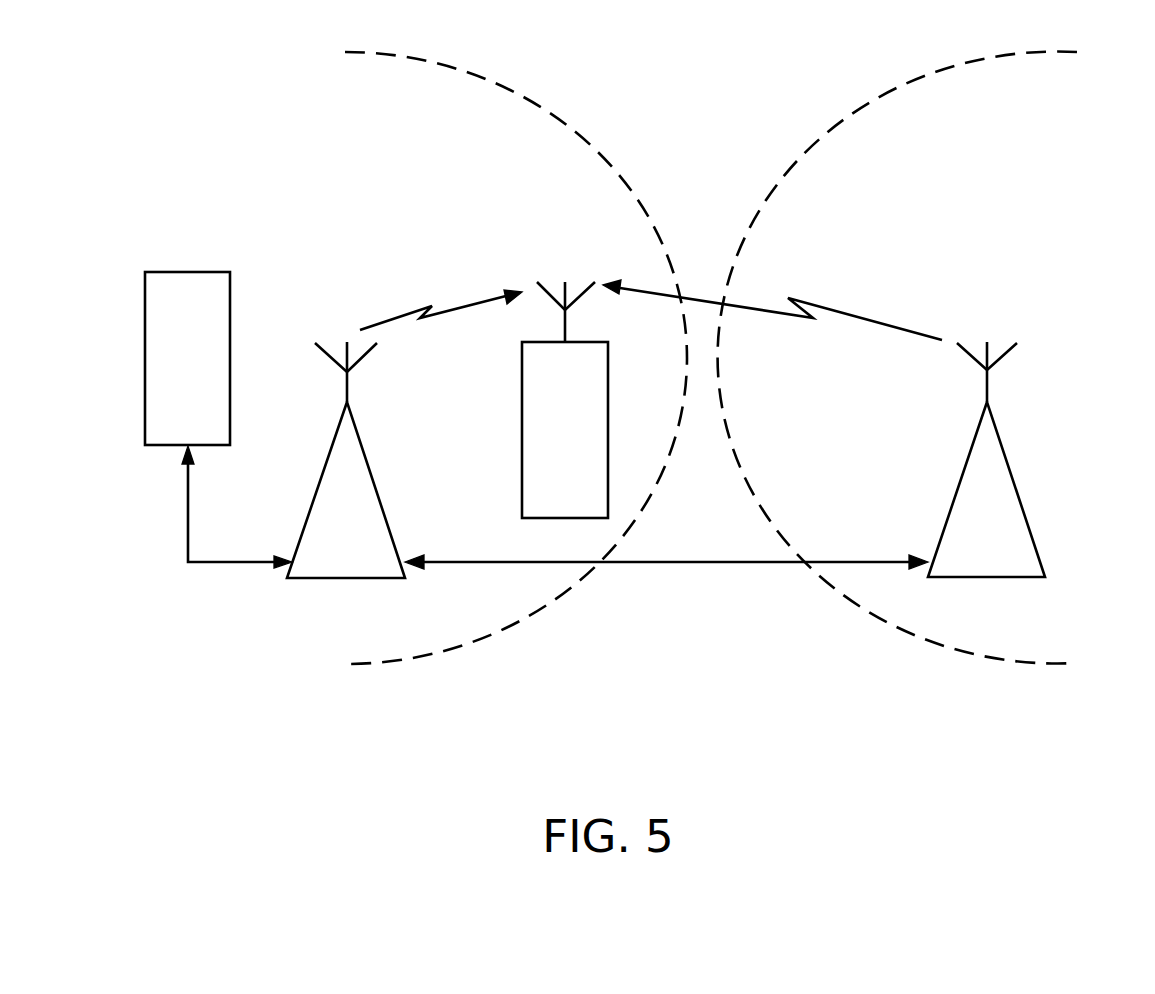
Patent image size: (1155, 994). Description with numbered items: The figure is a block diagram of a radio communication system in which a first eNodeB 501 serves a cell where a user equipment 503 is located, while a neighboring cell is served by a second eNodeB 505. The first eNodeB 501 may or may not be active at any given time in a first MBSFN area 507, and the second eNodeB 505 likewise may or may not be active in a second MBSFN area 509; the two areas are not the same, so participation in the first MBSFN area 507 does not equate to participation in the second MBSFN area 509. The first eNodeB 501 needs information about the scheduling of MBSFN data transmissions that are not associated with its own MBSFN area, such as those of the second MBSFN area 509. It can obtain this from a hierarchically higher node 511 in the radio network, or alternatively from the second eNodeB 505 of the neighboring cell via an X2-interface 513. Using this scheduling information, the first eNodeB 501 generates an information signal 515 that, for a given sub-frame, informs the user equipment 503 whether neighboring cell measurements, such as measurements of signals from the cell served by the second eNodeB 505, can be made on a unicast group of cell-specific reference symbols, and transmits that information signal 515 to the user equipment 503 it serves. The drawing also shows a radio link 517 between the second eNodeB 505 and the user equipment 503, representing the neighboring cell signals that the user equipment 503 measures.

The first eNodeB 501 is at (376, 488).
The user equipment 503 is at (609, 413).
The second eNodeB 505 is at (1020, 488).
The first MBSFN area 507 is at (380, 134).
The second MBSFN area 509 is at (968, 134).
The hierarchically higher node 511 is at (190, 271).
The X2-interface 513 is at (668, 560).
The information signal 515 is at (405, 313).
The radio link from eNodeB 505 to UE 517 is at (847, 312).